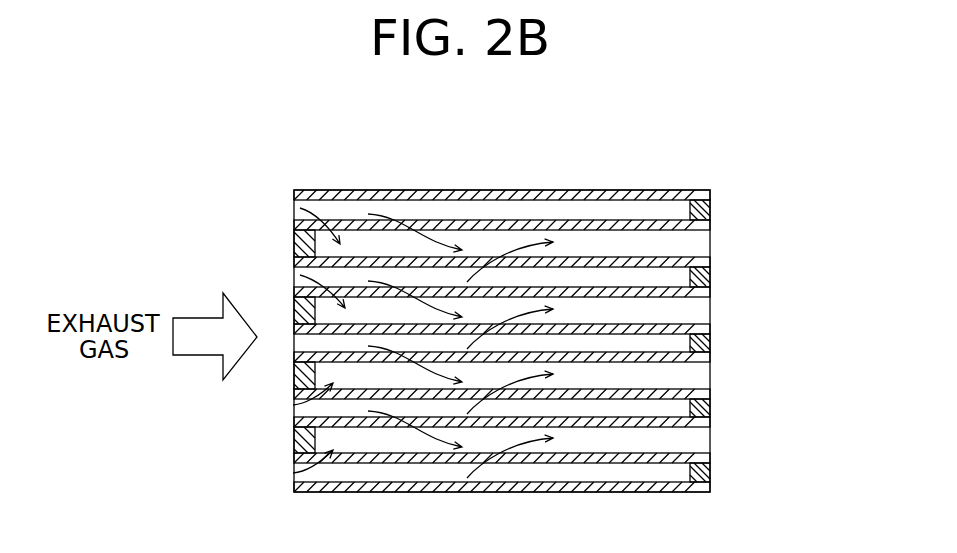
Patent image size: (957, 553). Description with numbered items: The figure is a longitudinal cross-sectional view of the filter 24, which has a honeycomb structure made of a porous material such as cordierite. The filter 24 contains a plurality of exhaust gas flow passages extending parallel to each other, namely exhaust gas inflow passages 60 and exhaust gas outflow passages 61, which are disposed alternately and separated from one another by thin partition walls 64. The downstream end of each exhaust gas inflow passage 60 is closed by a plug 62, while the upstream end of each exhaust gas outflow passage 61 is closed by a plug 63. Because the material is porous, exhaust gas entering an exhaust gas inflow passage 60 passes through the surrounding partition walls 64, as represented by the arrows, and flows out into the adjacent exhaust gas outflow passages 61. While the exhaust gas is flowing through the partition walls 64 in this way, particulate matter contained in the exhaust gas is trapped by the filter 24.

The filter 24 is at (620, 190).
The exhaust gas inflow passage 60 is at (662, 212).
The exhaust gas outflow passage 61 is at (315, 216).
The plug 62 is at (712, 208).
The plug 63 is at (293, 248).
The partition wall 64 is at (470, 257).